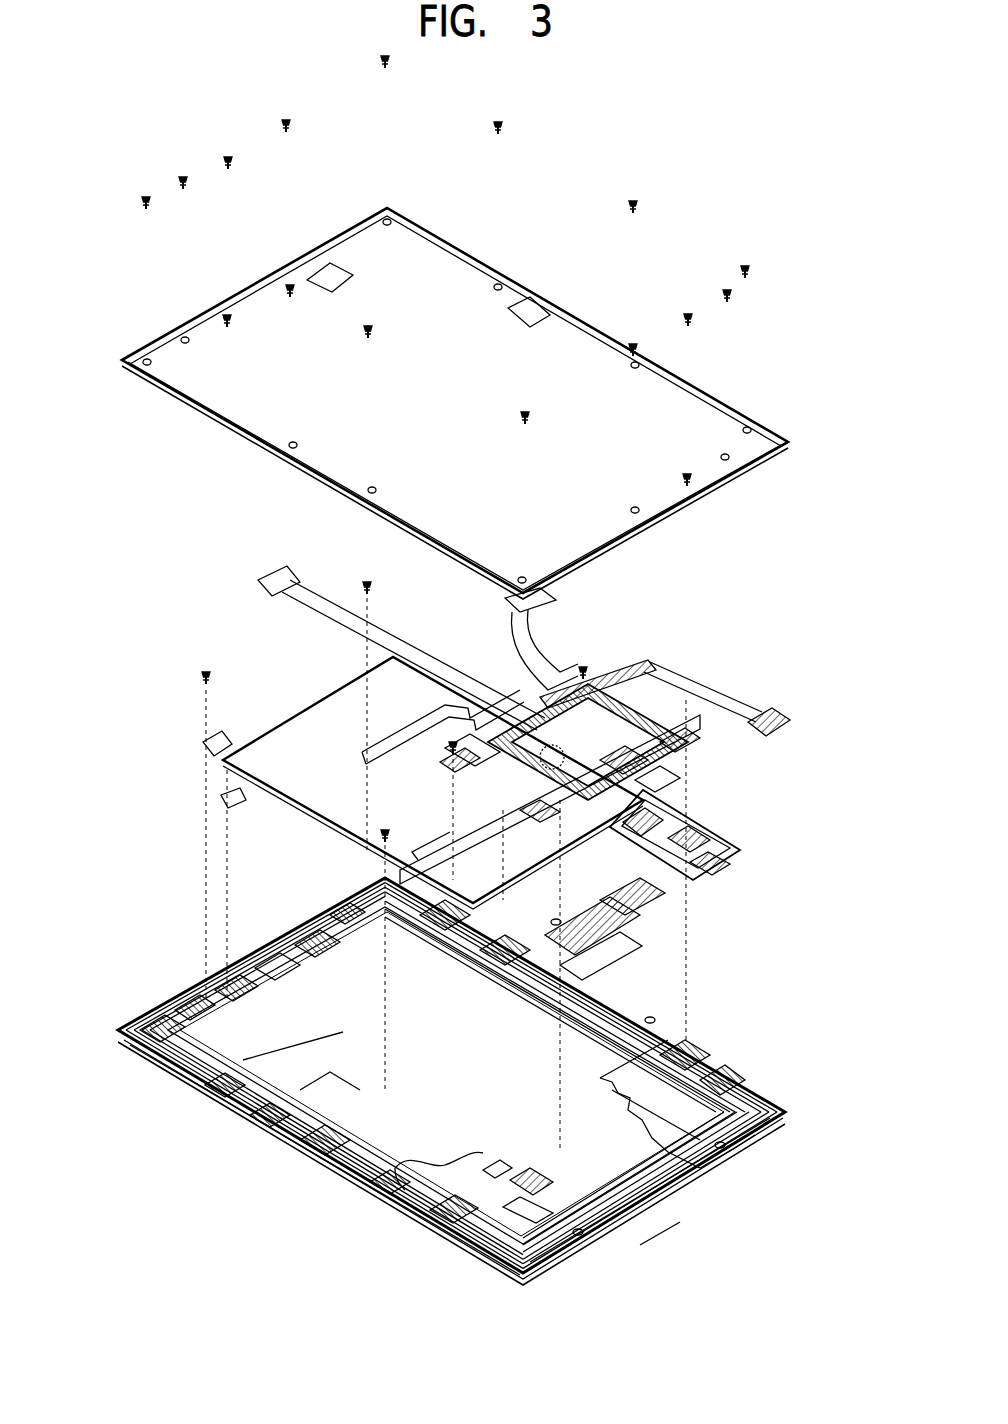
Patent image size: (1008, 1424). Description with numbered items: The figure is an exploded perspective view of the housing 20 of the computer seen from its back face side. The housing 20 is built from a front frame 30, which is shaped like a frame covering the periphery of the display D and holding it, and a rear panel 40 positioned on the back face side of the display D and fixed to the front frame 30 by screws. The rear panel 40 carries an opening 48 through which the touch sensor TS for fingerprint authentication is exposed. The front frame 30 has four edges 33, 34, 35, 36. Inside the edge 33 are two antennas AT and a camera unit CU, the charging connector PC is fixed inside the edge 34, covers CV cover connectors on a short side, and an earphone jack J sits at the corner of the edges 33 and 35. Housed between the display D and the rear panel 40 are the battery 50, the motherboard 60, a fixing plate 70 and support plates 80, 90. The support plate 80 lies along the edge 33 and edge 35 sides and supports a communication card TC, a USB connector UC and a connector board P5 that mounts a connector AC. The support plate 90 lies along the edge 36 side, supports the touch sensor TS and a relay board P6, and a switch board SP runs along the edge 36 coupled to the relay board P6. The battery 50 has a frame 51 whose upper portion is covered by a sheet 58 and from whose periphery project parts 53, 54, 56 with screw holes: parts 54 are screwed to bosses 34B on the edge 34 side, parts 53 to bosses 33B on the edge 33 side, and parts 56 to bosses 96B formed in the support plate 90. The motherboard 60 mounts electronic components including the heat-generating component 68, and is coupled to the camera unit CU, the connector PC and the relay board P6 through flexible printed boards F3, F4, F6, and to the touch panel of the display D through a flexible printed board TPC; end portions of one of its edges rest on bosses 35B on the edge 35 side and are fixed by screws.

The housing 20 is at (690, 233).
The front frame 30 is at (400, 1232).
The edge 33 is at (700, 1070).
The bosses 33B is at (556, 918).
The edge 34 is at (350, 1235).
The bosses 34B is at (200, 1095).
The edge 35 is at (785, 1130).
The bosses 35B is at (722, 1150).
The edge 36 is at (140, 1012).
The rear panel 40 is at (445, 235).
The opening 48 is at (345, 270).
The battery 50 is at (287, 707).
The frame 51 is at (240, 800).
The projecting parts 53 is at (512, 710).
The projecting parts 54 is at (203, 778).
The projecting parts 56 is at (386, 648).
The sheet 58 is at (333, 717).
The motherboard 60 is at (605, 682).
The electronic component 68 is at (640, 778).
The fixing plate 70 is at (540, 842).
The support plate 80 is at (752, 850).
The support plate 90 is at (165, 1050).
The bosses 96B is at (183, 985).
The flexible printed board F3 is at (552, 670).
The flexible printed board F4 is at (430, 715).
The flexible printed board F6 is at (312, 592).
The communication card TC is at (668, 668).
The earphone jack J is at (760, 712).
The connector board P5 is at (610, 884).
The relay board P6 is at (245, 945).
The touch sensor TS is at (317, 943).
The switch board SP is at (205, 978).
The antennas AT is at (492, 938).
The connector UC is at (680, 900).
The connector AC is at (600, 940).
The camera unit CU is at (600, 980).
The display D is at (243, 1120).
The connector PC is at (320, 1170).
The flexible printed board TPC is at (495, 1200).
The covers CV is at (650, 1238).